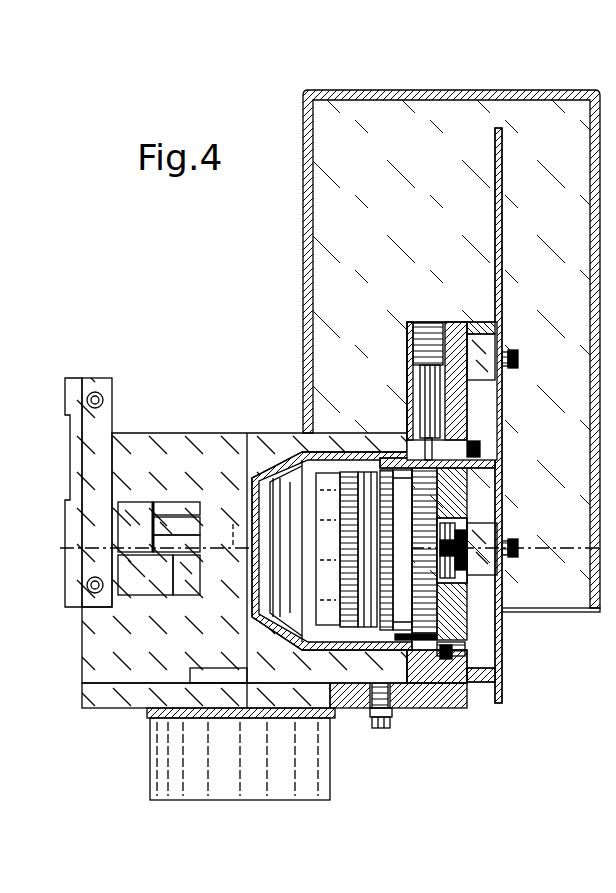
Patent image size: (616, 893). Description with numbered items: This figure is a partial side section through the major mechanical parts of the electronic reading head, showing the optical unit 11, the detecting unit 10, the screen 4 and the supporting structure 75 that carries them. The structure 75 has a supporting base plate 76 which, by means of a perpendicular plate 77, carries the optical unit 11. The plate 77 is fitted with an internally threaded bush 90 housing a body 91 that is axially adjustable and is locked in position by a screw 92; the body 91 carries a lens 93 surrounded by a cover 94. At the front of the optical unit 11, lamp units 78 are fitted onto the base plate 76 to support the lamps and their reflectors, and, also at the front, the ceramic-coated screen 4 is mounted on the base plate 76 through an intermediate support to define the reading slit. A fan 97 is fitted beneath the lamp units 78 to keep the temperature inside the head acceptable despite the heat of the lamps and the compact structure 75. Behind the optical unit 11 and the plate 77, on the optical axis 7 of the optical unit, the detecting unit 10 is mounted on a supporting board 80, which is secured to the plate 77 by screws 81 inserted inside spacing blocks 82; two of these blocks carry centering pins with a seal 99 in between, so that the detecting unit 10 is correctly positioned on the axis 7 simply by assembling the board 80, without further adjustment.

The screen 4 is at (62, 392).
The optical axis 7 is at (234, 523).
The detecting unit 10 is at (490, 578).
The optical unit 11 is at (290, 445).
The supporting structure 75 is at (200, 400).
The supporting base plate 76 is at (360, 693).
The perpendicular plate 77 is at (424, 694).
The lamp unit 78 is at (155, 500).
The supporting board 80 is at (498, 492).
The screw 81 is at (518, 360).
The spacing block 82 is at (488, 384).
The bush 90 is at (468, 685).
The body 91 is at (452, 626).
The screw 92 is at (424, 402).
The lens 93 is at (318, 470).
The cover 94 is at (382, 650).
The fan 97 is at (318, 778).
The seal 99 is at (478, 324).